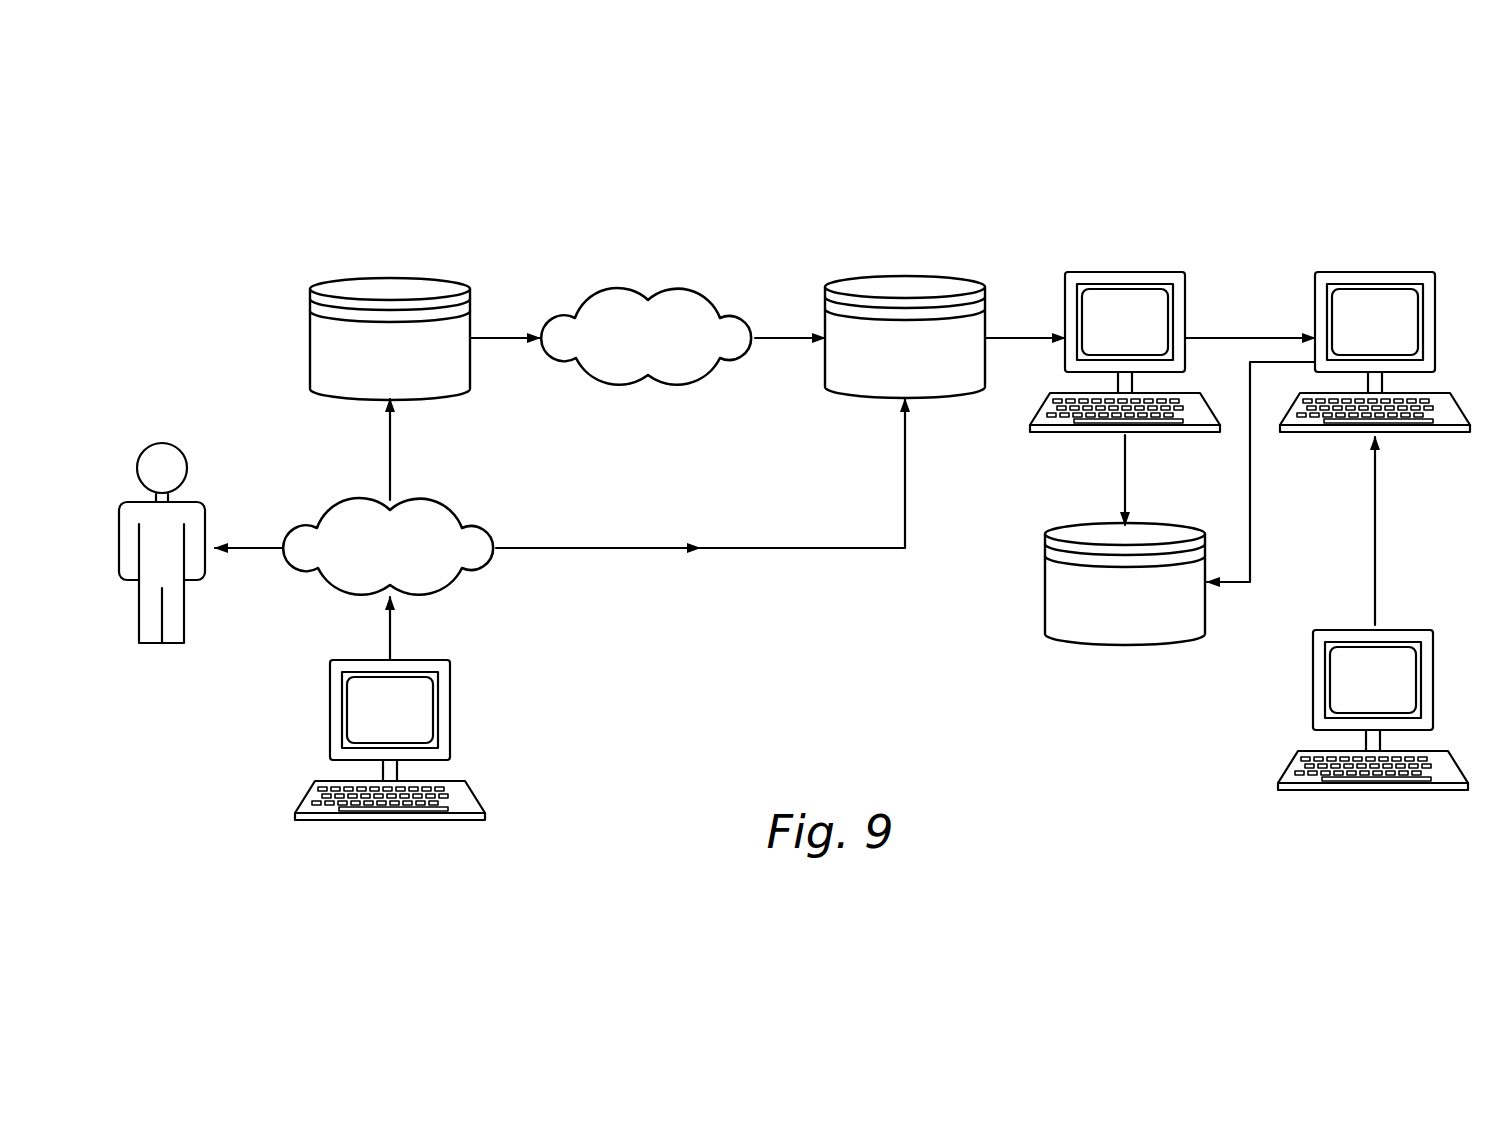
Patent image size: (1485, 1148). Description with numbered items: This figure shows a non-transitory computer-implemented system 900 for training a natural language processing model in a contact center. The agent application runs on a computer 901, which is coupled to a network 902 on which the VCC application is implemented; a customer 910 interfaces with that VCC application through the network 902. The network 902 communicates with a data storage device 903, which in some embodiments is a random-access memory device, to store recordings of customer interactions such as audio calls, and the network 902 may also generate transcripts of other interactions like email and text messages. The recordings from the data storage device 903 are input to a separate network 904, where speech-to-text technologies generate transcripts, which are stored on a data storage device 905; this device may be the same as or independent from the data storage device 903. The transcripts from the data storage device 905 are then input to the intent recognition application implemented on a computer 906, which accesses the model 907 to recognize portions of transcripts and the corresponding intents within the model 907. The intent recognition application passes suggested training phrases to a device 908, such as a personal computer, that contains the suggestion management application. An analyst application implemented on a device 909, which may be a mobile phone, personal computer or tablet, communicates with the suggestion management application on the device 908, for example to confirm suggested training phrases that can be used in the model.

The system architecture 900 is at (716, 205).
The computer 901 is at (452, 700).
The network 902 is at (438, 503).
The data storage device 903 is at (400, 278).
The separate network 904 is at (682, 292).
The data storage device 905 is at (915, 278).
The computer 906 is at (1063, 318).
The model 907 is at (1090, 525).
The device 908 is at (1315, 310).
The device 909 is at (1348, 628).
The customer 910 is at (175, 445).